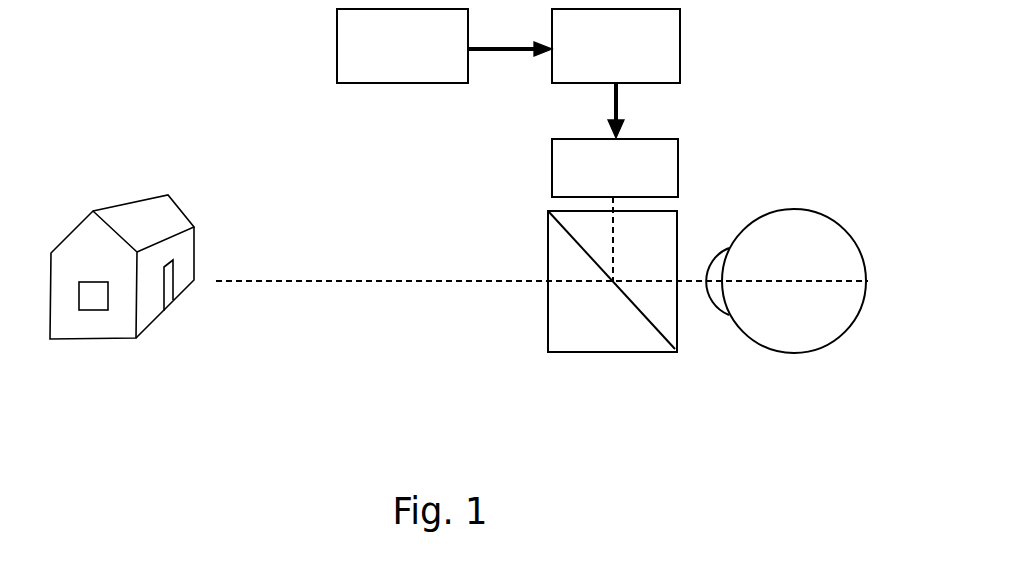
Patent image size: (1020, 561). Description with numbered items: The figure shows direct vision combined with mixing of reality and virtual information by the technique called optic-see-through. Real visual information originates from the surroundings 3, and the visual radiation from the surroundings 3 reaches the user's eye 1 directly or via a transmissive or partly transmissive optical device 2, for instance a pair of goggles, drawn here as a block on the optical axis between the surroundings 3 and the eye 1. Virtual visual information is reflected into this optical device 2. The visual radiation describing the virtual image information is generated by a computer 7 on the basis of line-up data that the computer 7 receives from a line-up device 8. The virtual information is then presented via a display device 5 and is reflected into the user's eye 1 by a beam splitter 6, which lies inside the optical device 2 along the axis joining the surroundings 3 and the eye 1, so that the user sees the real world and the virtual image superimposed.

The user's eye 1 is at (800, 362).
The transmissive or partly transmissive optical device 2 is at (596, 362).
The surroundings 3 is at (174, 346).
The display device 5 is at (702, 164).
The beam splitter 6 is at (636, 322).
The computer 7 is at (704, 52).
The line-up device 8 is at (312, 54).